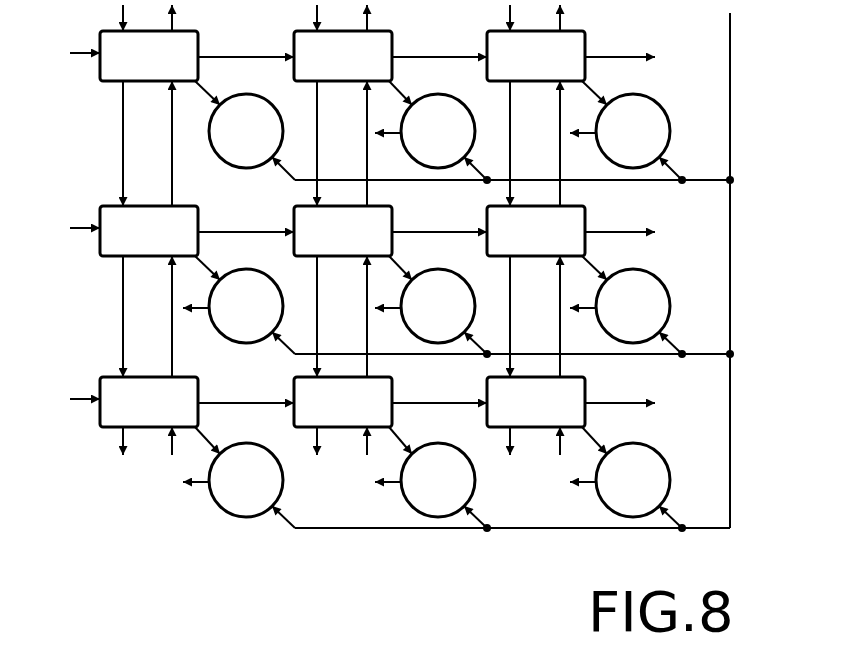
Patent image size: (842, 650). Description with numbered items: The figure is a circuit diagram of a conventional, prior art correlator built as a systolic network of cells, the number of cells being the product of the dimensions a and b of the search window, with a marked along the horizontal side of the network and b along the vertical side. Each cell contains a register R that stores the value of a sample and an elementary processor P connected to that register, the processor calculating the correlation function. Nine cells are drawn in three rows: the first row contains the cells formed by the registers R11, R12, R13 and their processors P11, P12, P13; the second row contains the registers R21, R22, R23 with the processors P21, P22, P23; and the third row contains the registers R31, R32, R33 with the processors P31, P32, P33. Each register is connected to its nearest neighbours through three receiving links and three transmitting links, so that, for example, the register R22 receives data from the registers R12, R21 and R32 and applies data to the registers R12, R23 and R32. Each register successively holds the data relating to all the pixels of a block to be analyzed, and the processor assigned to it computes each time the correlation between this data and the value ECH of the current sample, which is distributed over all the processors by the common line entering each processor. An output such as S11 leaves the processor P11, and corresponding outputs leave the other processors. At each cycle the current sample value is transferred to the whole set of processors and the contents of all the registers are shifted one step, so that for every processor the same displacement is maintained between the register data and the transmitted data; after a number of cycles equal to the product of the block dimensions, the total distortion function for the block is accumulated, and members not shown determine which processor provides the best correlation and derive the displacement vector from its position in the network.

The register R11 is at (149, 56).
The register R12 is at (343, 56).
The register R13 is at (536, 56).
The register R21 is at (149, 231).
The register R22 is at (343, 231).
The register R23 is at (536, 231).
The register R31 is at (149, 402).
The register R32 is at (343, 402).
The register R33 is at (536, 402).
The elementary processor P11 is at (246, 131).
The elementary processor P12 is at (438, 131).
The elementary processor P13 is at (633, 131).
The elementary processor P21 is at (246, 306).
The elementary processor P22 is at (438, 306).
The elementary processor P23 is at (633, 306).
The elementary processor P31 is at (246, 480).
The elementary processor P32 is at (438, 480).
The elementary processor P33 is at (633, 480).
The output signal of processing element P11 S11 is at (209, 133).
The value of the current sample ECH is at (730, 150).
The dimension of the search window a is at (690, 560).
The dimension of the search window b is at (51, 5).